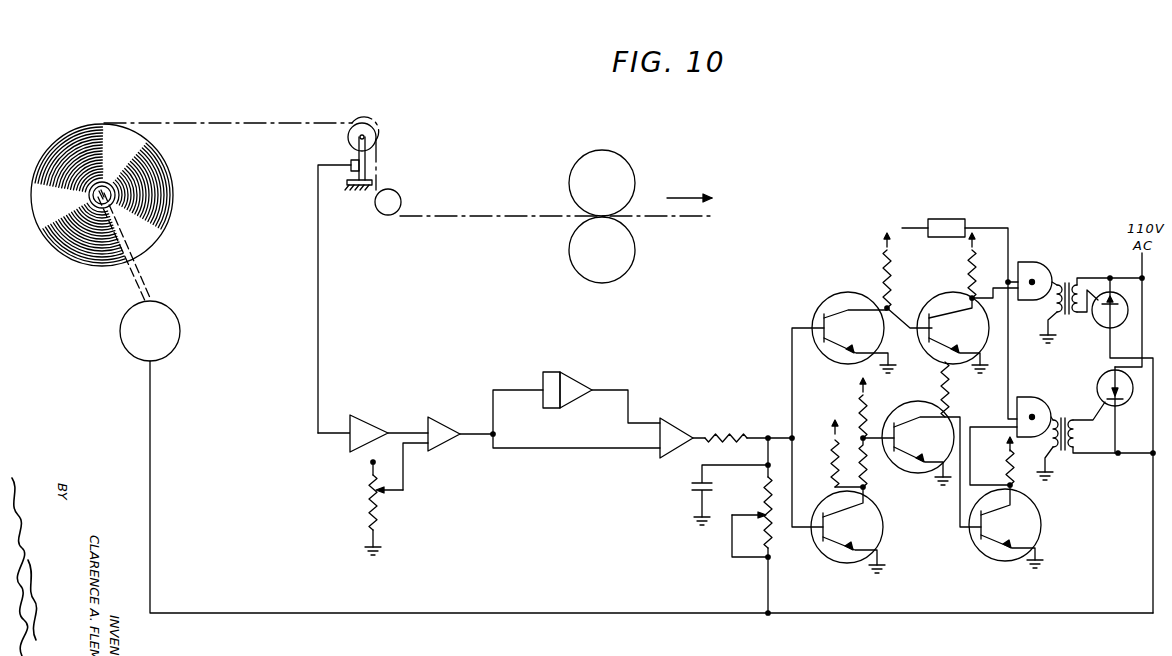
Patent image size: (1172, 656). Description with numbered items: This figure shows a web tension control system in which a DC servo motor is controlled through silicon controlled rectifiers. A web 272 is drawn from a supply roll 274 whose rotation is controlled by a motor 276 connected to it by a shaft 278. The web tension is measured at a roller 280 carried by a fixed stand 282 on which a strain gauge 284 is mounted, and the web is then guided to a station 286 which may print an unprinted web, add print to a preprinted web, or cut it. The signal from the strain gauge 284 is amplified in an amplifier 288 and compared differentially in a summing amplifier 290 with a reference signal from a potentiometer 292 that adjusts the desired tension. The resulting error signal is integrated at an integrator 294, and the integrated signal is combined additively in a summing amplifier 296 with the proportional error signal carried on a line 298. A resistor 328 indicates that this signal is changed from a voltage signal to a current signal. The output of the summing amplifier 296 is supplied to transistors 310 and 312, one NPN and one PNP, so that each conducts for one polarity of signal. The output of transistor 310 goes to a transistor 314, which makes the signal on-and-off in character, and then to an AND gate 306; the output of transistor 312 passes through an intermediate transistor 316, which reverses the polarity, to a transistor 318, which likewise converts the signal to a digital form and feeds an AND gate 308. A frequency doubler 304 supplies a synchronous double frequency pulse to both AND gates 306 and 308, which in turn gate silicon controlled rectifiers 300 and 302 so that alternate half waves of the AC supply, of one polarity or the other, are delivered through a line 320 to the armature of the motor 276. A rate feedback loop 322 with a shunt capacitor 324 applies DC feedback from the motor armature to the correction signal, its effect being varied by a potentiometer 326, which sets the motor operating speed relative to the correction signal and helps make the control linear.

The web 272 is at (294, 119).
The supply roll 274 is at (173, 192).
The motor 276 is at (181, 326).
The shaft 278 is at (142, 278).
The roller 280 is at (378, 137).
The fixed stand 282 is at (348, 185).
The strain gauge 284 is at (351, 165).
The station 286 is at (622, 140).
The amplifier 288 is at (366, 414).
The summing amplifier 290 is at (448, 408).
The potentiometer 292 is at (369, 491).
The integrator 294 is at (587, 365).
The summing amplifier 296 is at (681, 410).
The line 298 is at (555, 450).
The silicon controlled rectifier 300 is at (1105, 330).
The silicon controlled rectifier 302 is at (1100, 399).
The frequency doubler 304 is at (947, 237).
The AND gate 306 is at (1045, 259).
The AND gate 308 is at (1029, 397).
The transistor 310 is at (848, 294).
The transistor 312 is at (828, 562).
The transistor 314 is at (951, 296).
The transistor 316 is at (918, 474).
The transistor 318 is at (985, 556).
The line 320 is at (481, 614).
The rate feedback loop 322 is at (767, 583).
The shunt capacitor 324 is at (692, 483).
The potentiometer 326 is at (762, 507).
The resistor 328 is at (729, 433).